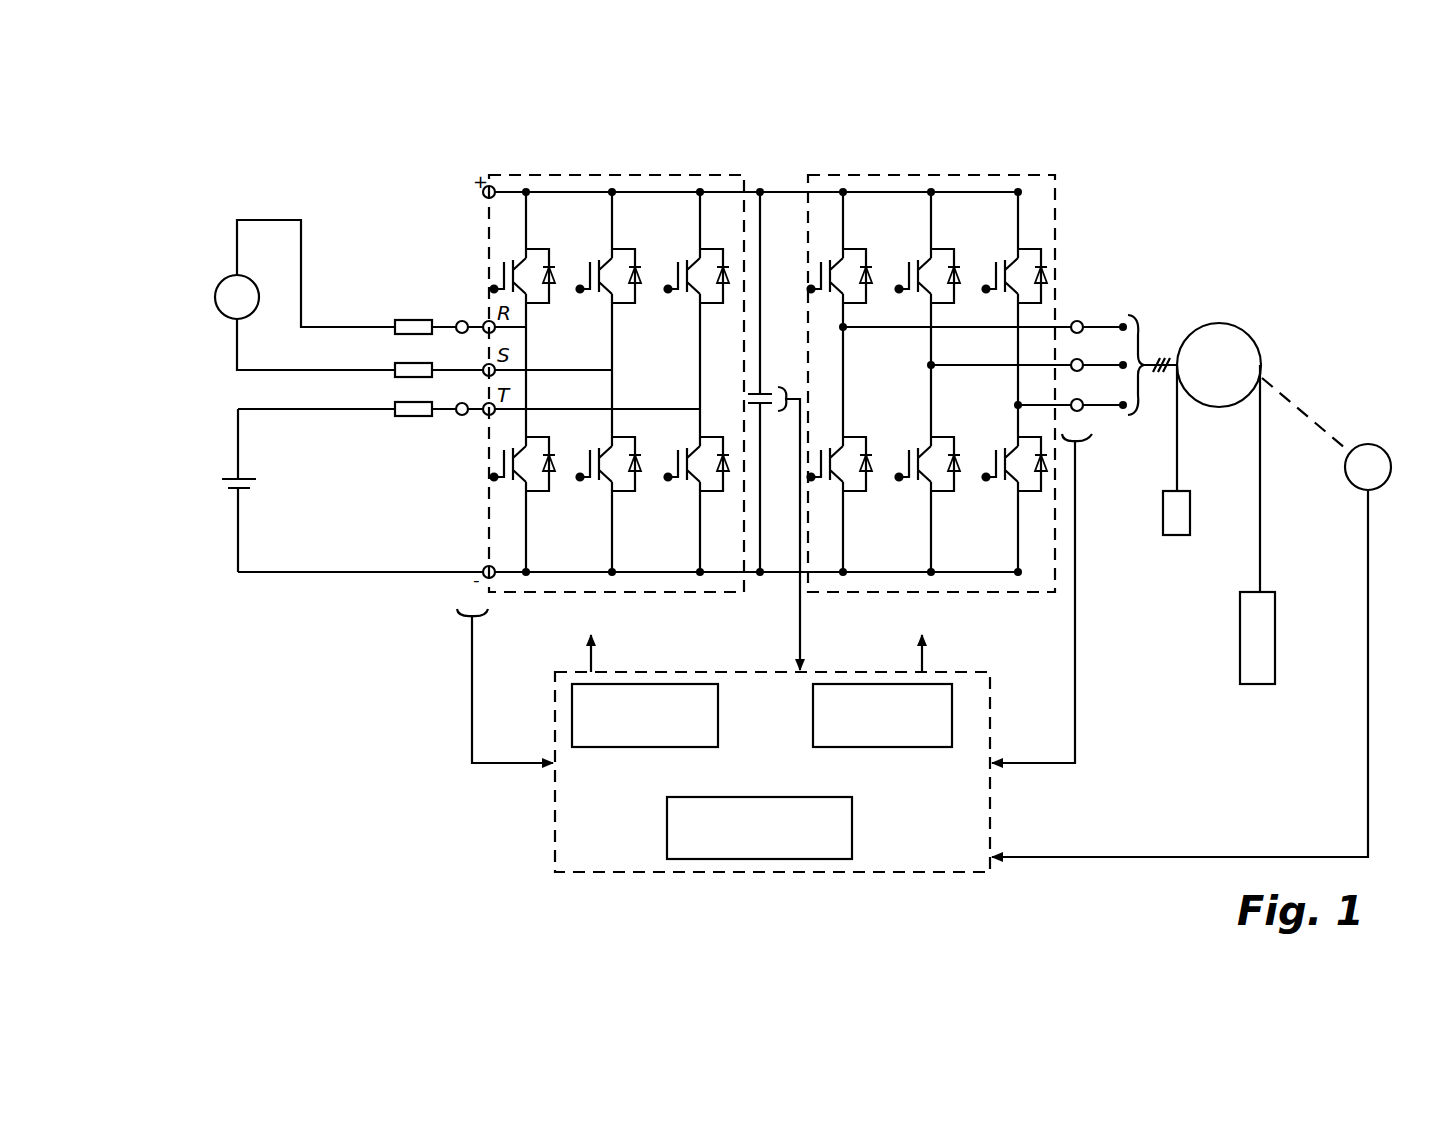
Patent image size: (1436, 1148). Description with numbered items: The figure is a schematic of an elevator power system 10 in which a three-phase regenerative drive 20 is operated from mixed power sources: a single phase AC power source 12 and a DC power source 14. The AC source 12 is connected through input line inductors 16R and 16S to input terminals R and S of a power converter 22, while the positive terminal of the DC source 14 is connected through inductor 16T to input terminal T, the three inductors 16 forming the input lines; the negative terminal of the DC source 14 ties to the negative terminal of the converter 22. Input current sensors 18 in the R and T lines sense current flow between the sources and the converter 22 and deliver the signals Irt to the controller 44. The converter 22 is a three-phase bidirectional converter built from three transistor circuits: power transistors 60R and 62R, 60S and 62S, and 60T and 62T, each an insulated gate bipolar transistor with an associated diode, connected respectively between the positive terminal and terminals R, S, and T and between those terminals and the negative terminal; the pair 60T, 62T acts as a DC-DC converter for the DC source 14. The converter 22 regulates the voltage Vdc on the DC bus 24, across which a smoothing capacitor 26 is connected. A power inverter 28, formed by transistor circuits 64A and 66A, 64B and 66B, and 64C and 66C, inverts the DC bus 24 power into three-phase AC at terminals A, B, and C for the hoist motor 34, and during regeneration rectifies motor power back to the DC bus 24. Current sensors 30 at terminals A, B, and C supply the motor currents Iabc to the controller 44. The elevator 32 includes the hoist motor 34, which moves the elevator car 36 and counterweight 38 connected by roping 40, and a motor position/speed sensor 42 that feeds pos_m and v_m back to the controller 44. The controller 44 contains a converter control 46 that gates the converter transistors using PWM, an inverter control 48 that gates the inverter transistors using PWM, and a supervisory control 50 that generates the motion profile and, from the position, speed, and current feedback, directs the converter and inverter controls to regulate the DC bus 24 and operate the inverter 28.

The power system 10 is at (278, 735).
The single phase AC power source 12 is at (214, 328).
The DC power source 14 is at (226, 499).
The input line inductors 16 is at (390, 394).
The input line inductor 16R is at (409, 318).
The input line inductor 16S is at (396, 363).
The input line inductor 16T is at (398, 418).
The input current sensors 18 is at (470, 300).
The regenerative drive 20 is at (771, 140).
The power converter 22 is at (626, 371).
The DC bus 24 is at (777, 177).
The smoothing capacitor 26 is at (770, 386).
The power inverter 28 is at (956, 359).
The current sensors 30 is at (1084, 298).
The elevator 32 is at (1194, 269).
The hoist motor 34 is at (1205, 322).
The elevator car 36 is at (1276, 620).
The counterweight 38 is at (1172, 540).
The roping 40 is at (1261, 503).
The motor position/speed sensor 42 is at (1369, 443).
The controller 44 is at (723, 737).
The converter control 46 is at (635, 748).
The inverter control 48 is at (895, 748).
The supervisory control 50 is at (852, 830).
The power transistor 60R is at (533, 240).
The power transistor 60S is at (619, 240).
The power transistor 60T is at (707, 242).
The power transistor 62R is at (533, 498).
The power transistor 62S is at (619, 498).
The power transistor 62T is at (715, 509).
The power transistor 64A is at (850, 240).
The power transistor 64B is at (938, 240).
The power transistor 64C is at (1032, 236).
The power transistor 66A is at (850, 498).
The power transistor 66B is at (938, 498).
The power transistor 66C is at (1032, 503).